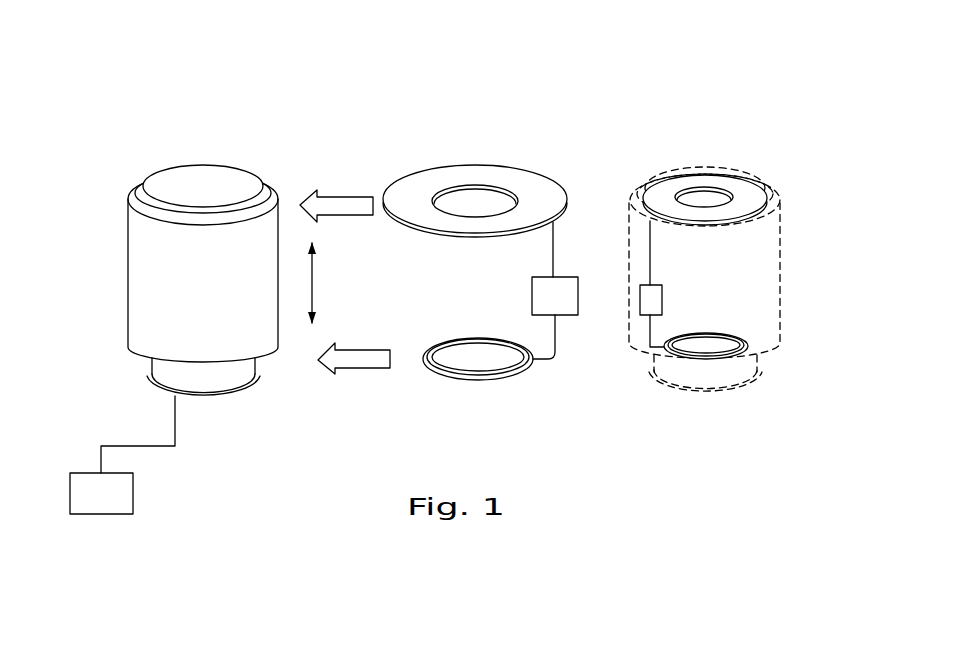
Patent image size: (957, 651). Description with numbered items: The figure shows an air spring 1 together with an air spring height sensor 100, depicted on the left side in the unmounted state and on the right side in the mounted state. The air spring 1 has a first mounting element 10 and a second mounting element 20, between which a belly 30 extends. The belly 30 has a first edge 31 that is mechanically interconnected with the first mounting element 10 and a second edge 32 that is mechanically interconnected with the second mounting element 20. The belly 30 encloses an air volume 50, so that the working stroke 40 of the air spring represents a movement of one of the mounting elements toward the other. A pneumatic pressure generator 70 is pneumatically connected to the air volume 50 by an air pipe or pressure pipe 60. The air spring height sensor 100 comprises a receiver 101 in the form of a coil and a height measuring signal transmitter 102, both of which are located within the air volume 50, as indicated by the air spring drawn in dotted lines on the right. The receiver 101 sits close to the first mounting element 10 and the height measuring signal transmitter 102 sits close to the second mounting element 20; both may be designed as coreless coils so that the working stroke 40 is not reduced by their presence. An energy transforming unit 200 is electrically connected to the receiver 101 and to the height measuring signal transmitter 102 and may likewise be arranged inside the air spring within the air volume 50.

The air spring 1 is at (170, 349).
The first mounting element 10 is at (232, 188).
The second mounting element 20 is at (220, 397).
The belly 30 is at (127, 303).
The first edge 31 is at (137, 193).
The second edge 32 is at (140, 355).
The working stroke 40 is at (312, 280).
The air volume 50 is at (768, 263).
The air pipe/pressure pipe 60 is at (148, 447).
The pneumatic pressure generator 70 is at (102, 505).
The air spring height sensor 100 is at (587, 241).
The receiver 101 is at (533, 190).
The height measuring signal transmitter 102 is at (490, 375).
The energy transforming unit 200 is at (647, 283).